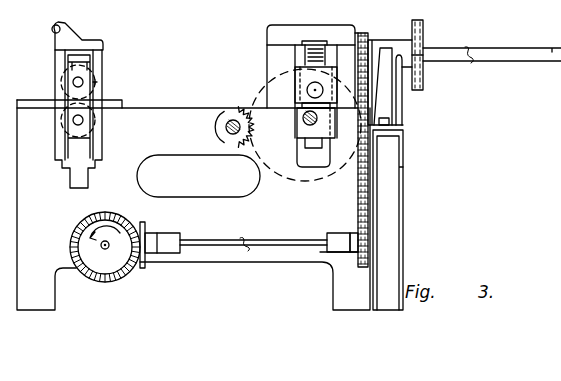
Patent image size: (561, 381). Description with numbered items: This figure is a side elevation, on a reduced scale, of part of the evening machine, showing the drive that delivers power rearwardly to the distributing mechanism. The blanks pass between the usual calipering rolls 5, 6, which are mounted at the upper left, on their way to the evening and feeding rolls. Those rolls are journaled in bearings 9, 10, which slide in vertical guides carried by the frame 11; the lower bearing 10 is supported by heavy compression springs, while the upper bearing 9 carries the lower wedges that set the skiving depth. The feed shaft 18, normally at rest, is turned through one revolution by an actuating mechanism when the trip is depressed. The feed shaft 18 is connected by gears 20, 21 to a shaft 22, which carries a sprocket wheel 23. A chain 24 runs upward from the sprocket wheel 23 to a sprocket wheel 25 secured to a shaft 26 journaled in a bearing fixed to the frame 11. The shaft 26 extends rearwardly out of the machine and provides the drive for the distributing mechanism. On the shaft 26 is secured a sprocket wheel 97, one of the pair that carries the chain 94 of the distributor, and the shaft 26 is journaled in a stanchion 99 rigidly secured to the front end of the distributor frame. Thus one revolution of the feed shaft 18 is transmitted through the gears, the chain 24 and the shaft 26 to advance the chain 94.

The calipering roll 5 is at (104, 80).
The calipering roll 6 is at (103, 120).
The bearing 9 is at (305, 77).
The bearing 10 is at (301, 129).
The frame 11 is at (193, 205).
The feed shaft 18 is at (105, 249).
The gear 20 is at (80, 220).
The gear 21 is at (147, 227).
The shaft 22 is at (307, 223).
The sprocket wheel 23 is at (361, 264).
The chain 24 is at (360, 181).
The sprocket wheel 25 is at (369, 39).
The shaft 26 is at (522, 52).
The chain 94 is at (424, 82).
The sprocket wheel 97 is at (420, 17).
The stanchion 99 is at (403, 113).